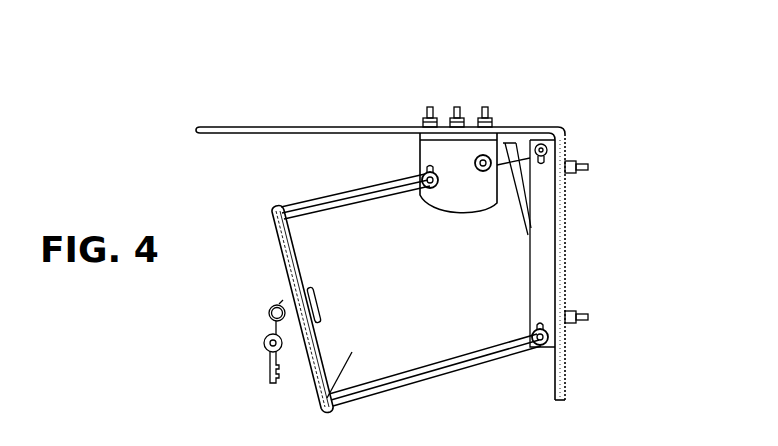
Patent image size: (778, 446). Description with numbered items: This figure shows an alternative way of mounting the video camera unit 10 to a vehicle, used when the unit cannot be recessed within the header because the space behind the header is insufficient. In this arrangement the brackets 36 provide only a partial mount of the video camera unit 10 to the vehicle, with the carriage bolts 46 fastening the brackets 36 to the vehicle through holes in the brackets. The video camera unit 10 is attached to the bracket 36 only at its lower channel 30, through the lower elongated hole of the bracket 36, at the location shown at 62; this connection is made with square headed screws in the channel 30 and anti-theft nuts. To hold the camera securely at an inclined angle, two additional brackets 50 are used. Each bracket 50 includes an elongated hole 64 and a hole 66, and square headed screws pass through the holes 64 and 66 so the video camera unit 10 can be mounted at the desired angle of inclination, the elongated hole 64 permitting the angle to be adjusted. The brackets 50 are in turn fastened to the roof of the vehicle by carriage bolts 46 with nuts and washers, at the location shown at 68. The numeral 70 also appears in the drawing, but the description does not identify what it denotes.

The video camera unit 10 is at (323, 396).
The lower channel 30 is at (328, 208).
The bracket 36 is at (550, 270).
The carriage bolt 46 is at (479, 114).
The bracket 50 is at (420, 151).
The lower mounting location 62 is at (536, 342).
The elongated hole 64 is at (422, 180).
The hole 66 is at (482, 170).
The roof mounting location 68 is at (423, 121).
The base 70 is at (158, 439).